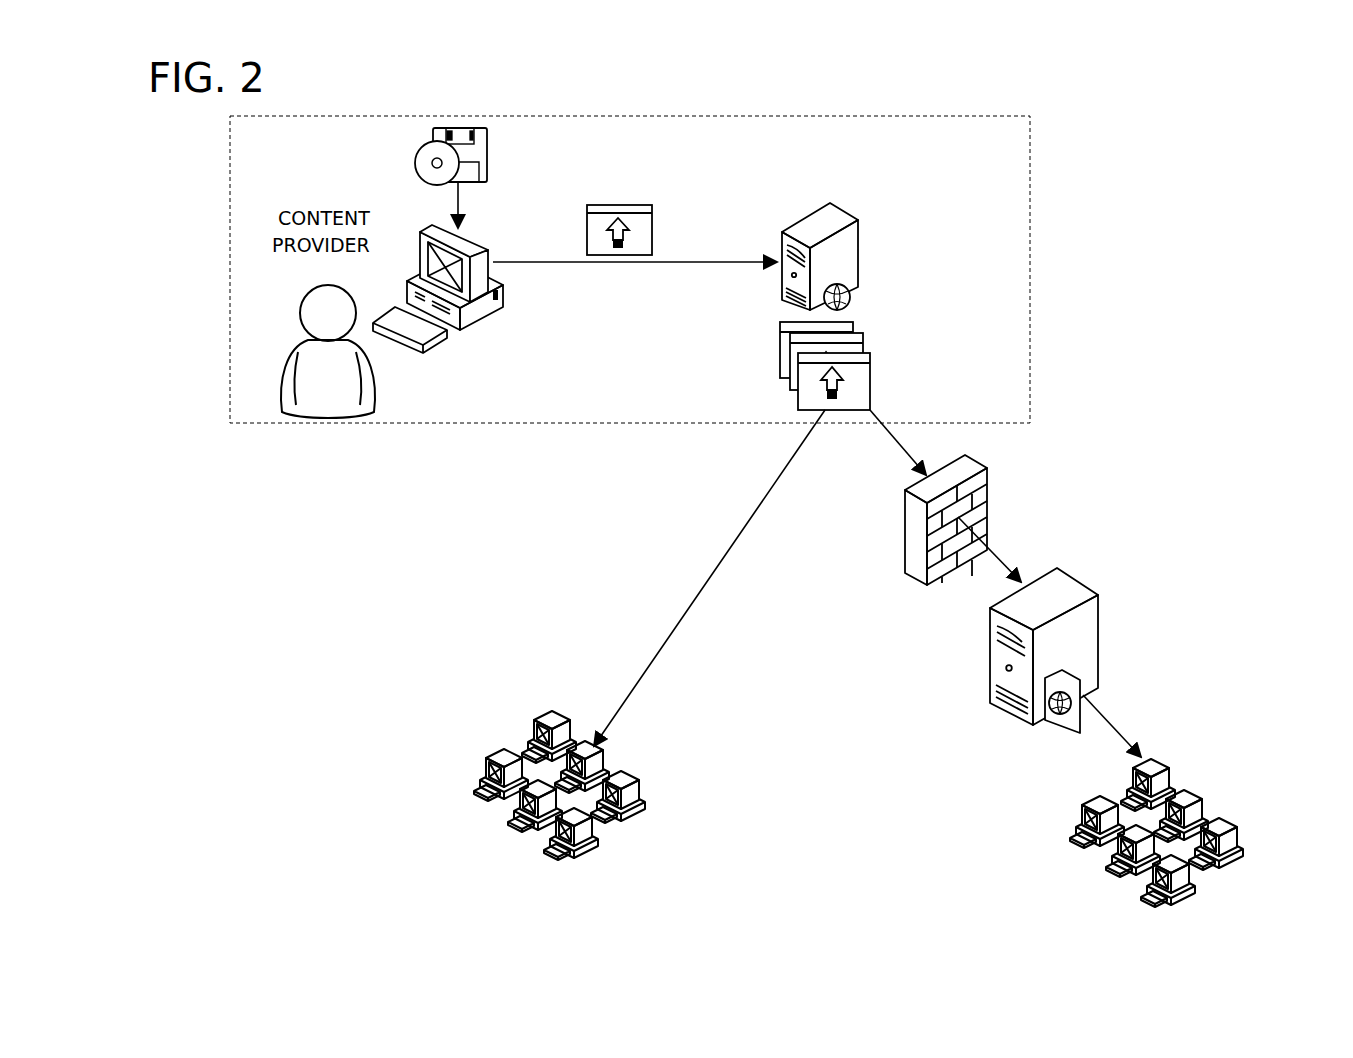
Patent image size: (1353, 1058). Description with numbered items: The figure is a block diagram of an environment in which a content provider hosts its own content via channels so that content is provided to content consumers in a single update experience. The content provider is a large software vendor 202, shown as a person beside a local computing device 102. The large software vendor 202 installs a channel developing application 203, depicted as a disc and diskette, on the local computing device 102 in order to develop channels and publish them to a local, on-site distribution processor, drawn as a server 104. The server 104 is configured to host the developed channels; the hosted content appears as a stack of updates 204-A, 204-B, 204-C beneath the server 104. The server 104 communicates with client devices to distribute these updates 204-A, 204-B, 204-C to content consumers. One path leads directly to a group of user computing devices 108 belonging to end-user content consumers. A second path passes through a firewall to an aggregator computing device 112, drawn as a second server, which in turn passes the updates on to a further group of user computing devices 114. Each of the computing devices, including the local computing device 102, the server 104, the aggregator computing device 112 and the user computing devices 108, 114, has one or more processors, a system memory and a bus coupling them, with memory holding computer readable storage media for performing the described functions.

The local computing device 102 is at (503, 292).
The server 104 is at (830, 203).
The user computing device 108 is at (559, 785).
The aggregator computing device 112 is at (1075, 578).
The user computing device 114 is at (1156, 831).
The large software vendor 202 is at (375, 388).
The channel developing application 203 is at (488, 170).
The update 204-A is at (872, 394).
The update 204-B is at (863, 347).
The update 204-C is at (853, 325).